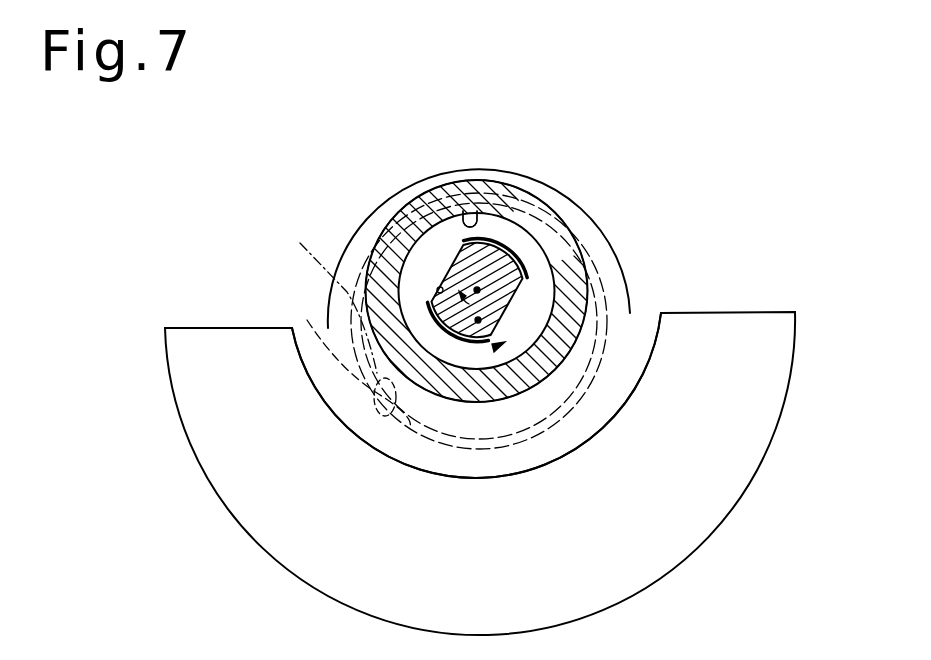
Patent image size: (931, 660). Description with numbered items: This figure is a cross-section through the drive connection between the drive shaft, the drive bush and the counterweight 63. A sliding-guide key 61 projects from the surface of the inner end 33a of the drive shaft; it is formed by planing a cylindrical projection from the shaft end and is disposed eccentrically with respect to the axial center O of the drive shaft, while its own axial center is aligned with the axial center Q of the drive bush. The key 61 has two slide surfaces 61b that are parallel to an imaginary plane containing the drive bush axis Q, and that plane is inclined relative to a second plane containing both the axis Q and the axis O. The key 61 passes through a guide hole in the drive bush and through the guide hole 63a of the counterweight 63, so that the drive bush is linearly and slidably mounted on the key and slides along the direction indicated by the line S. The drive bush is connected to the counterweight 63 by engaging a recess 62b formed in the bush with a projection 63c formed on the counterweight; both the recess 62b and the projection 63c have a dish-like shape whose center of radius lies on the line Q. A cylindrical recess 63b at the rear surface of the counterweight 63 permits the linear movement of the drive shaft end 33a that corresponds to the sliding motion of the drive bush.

The counterweight 63 is at (617, 293).
The guide hole 63a is at (440, 290).
The cylindrical recess 63b is at (307, 320).
The projection 63c is at (505, 168).
The inner end of the drive shaft 33a is at (300, 243).
The sliding-guide key 61 is at (480, 321).
The slide surfaces 61b is at (441, 287).
The recess 62b is at (473, 214).
The sliding direction line S is at (408, 400).
The axial center of the drive bush Q is at (440, 288).
The axial center of the drive shaft O is at (588, 372).